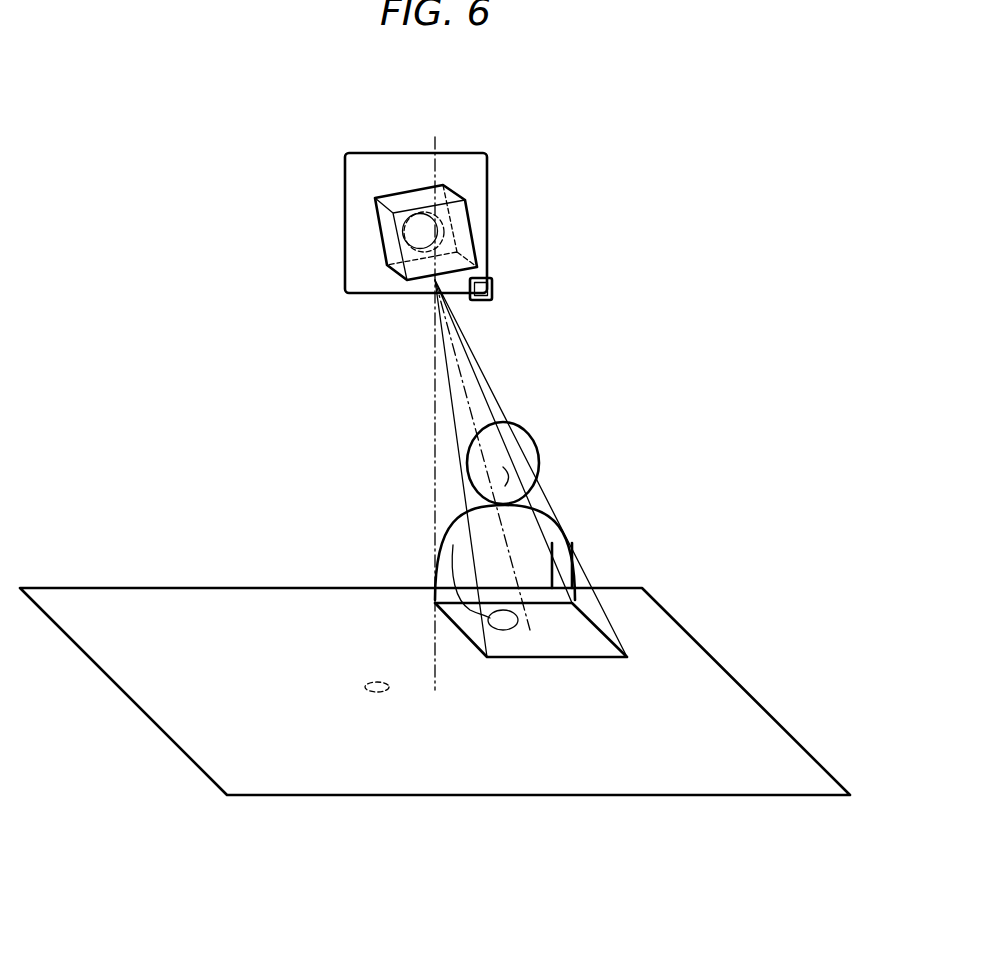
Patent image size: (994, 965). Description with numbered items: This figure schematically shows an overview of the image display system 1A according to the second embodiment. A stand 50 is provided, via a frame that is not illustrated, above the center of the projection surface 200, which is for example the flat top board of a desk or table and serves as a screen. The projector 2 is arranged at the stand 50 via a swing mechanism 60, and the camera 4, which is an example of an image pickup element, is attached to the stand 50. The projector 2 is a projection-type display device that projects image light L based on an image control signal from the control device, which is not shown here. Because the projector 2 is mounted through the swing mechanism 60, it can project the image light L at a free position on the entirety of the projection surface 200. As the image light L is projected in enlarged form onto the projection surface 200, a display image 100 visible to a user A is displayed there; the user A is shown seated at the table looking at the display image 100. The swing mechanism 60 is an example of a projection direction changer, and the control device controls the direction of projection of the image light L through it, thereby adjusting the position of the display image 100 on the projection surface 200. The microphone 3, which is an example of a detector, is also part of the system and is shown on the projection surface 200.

The image display system 1A is at (215, 153).
The stand 50 is at (367, 165).
The swing mechanism 60 is at (418, 228).
The projector 2 is at (470, 213).
The camera 4 is at (488, 280).
The image light L is at (434, 402).
The user A is at (502, 415).
The display image 100 is at (568, 617).
The projection surface 200 is at (677, 703).
The microphone 3 is at (363, 687).